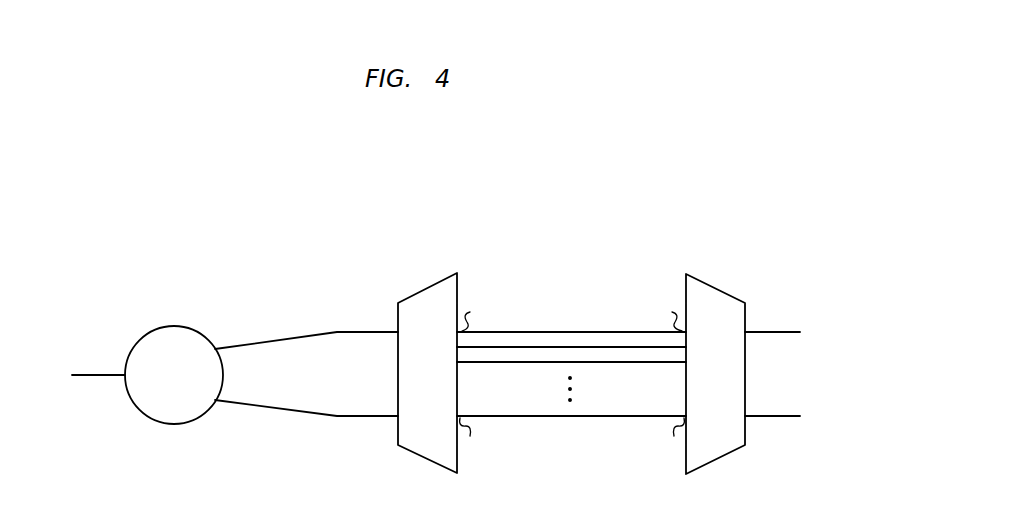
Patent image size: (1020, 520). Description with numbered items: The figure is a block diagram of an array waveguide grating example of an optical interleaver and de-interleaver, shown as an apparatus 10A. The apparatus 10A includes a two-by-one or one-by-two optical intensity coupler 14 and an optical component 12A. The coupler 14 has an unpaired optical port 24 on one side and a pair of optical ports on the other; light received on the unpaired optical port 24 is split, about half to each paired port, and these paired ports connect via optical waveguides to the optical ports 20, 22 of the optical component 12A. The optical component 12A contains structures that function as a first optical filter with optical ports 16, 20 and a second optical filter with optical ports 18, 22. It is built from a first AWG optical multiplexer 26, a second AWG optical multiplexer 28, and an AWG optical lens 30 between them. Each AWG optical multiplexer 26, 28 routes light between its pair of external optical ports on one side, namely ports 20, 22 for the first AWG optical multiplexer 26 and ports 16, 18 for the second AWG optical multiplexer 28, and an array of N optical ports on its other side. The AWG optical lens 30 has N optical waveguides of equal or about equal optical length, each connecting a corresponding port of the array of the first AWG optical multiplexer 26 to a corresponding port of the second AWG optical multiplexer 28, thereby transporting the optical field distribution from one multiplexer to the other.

The apparatus 10A is at (241, 268).
The optical component 12A is at (743, 187).
The optical coupler 14 is at (165, 388).
The optical port 16 is at (781, 330).
The optical port 18 is at (778, 420).
The optical port 20 is at (351, 330).
The optical port 22 is at (348, 420).
The unpaired optical port 24 is at (106, 372).
The first AWG optical multiplexer 26 is at (438, 388).
The second AWG optical multiplexer 28 is at (725, 388).
The AWG optical lens 30 is at (594, 262).